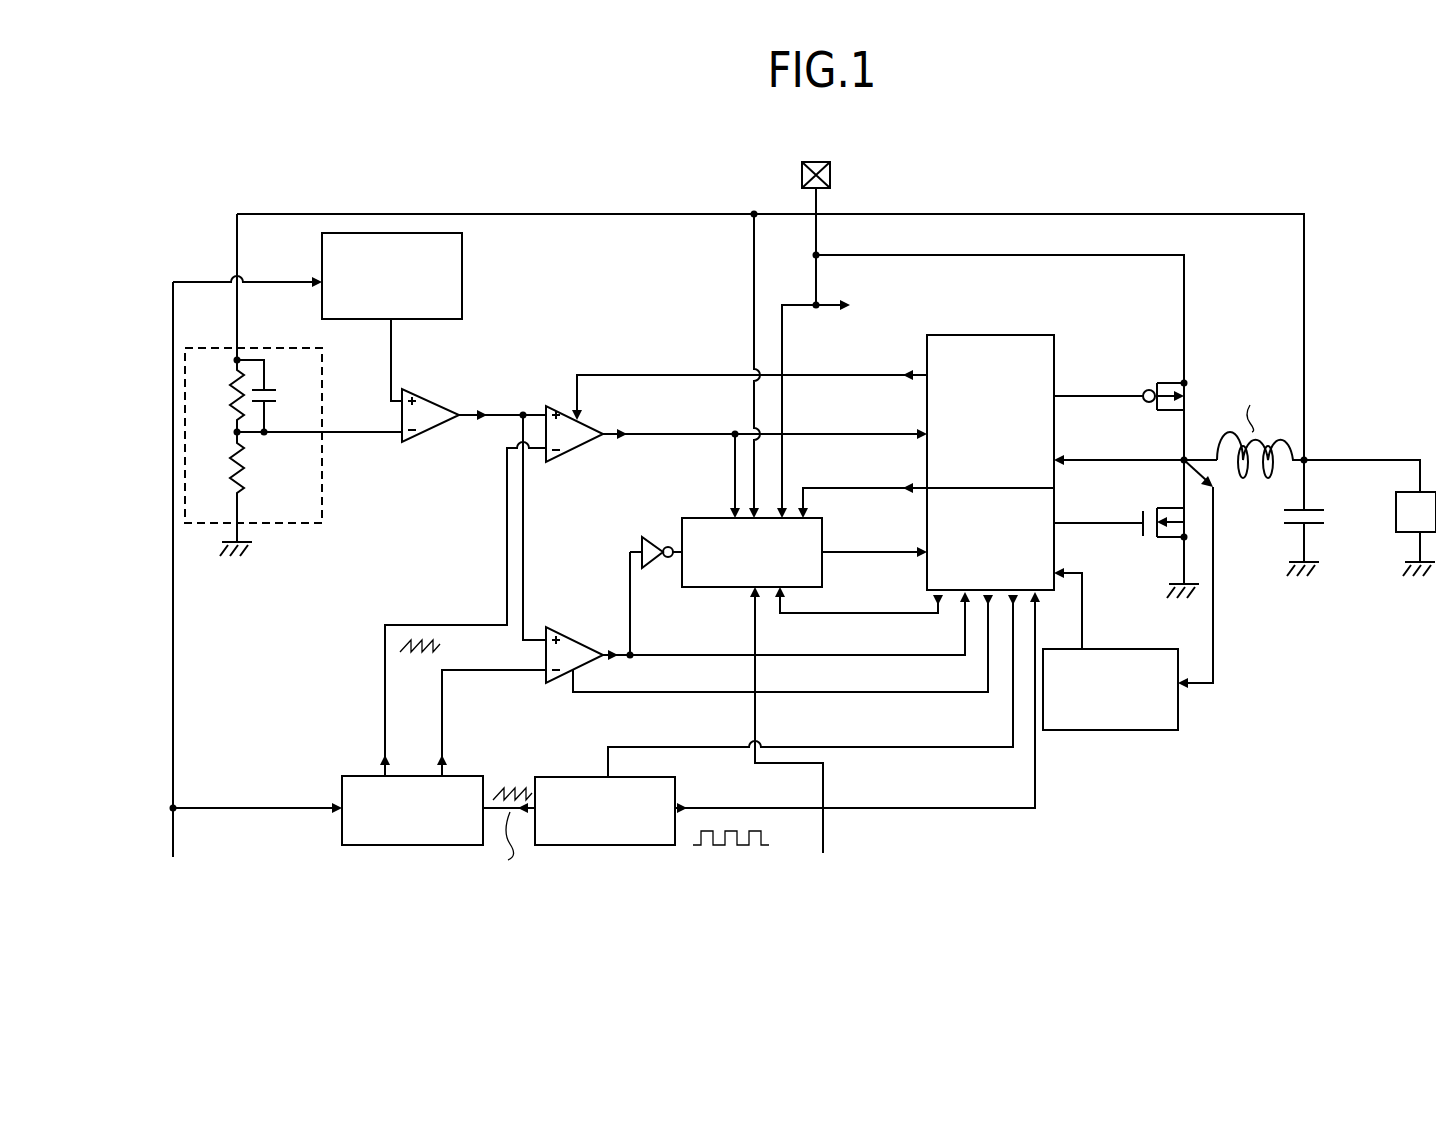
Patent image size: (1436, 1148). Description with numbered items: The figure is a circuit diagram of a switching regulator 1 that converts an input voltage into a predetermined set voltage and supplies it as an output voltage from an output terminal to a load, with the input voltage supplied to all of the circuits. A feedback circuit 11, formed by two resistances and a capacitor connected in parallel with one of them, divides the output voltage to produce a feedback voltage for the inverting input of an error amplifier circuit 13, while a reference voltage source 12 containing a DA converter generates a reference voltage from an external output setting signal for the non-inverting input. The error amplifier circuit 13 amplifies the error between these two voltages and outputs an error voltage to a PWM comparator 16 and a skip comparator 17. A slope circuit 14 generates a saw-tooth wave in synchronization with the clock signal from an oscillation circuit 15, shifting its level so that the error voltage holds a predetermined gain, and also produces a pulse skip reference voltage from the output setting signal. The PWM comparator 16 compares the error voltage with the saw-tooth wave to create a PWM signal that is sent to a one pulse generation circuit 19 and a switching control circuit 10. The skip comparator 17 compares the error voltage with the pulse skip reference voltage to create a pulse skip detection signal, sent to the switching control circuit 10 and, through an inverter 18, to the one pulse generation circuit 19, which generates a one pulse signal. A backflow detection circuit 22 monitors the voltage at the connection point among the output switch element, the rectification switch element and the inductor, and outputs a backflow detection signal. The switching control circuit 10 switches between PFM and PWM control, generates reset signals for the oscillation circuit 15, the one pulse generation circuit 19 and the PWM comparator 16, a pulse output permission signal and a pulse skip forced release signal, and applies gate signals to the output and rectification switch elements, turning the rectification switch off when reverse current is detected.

The switching regulator 1 is at (358, 184).
The switching control circuit 10 is at (1040, 335).
The feedback circuit 11 is at (303, 523).
The reference voltage source 12 is at (462, 262).
The error amplifier circuit 13 is at (425, 431).
The slope circuit 14 is at (415, 845).
The oscillation circuit 15 is at (607, 845).
The PWM comparator 16 is at (560, 413).
The skip comparator 17 is at (557, 678).
The inverter 18 is at (650, 537).
The one pulse generation circuit 19 is at (709, 518).
The backflow detection circuit 22 is at (1117, 730).